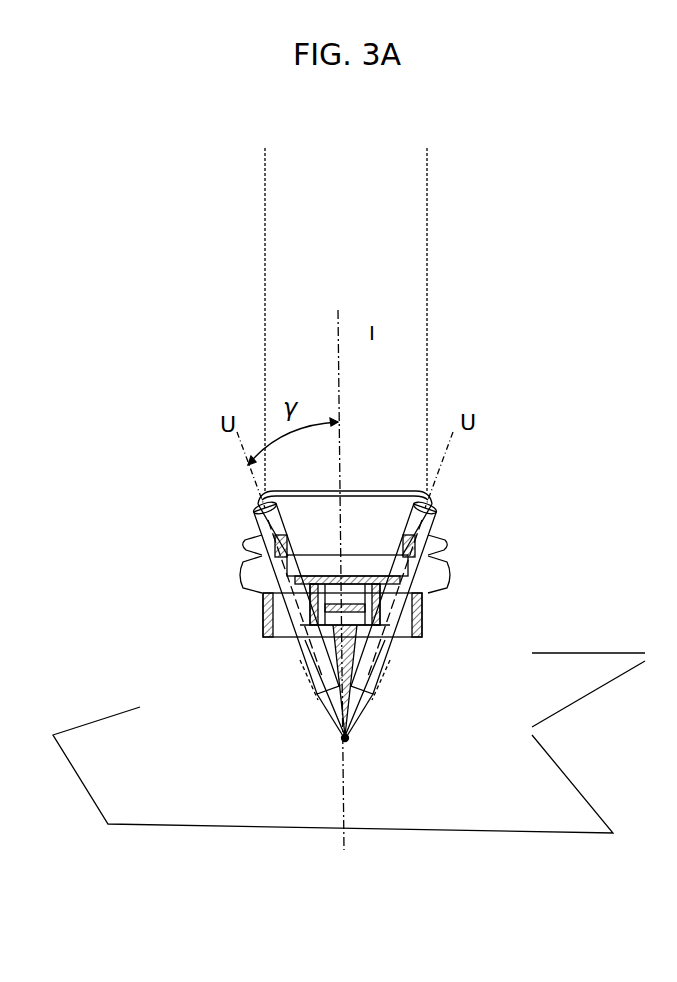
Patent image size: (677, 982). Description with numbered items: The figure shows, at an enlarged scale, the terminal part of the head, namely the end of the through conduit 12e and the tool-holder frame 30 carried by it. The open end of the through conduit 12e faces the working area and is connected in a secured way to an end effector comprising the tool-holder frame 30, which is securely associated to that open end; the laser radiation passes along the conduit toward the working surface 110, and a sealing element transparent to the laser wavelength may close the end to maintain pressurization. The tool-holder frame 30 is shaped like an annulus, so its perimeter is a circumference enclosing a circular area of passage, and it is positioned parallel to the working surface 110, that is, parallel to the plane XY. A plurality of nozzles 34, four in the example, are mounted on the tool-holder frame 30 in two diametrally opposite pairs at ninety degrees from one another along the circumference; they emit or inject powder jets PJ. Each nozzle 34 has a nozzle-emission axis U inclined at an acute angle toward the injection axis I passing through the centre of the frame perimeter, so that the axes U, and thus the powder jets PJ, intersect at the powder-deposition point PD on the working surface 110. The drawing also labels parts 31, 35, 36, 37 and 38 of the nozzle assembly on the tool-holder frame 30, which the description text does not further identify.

The through conduit 12e is at (265, 256).
The tool-holder frame 30 is at (358, 598).
The nozzle holder 31 is at (450, 545).
The nozzles 34 is at (310, 683).
The nozzle tip 35 is at (428, 648).
The lower flange 36 is at (248, 586).
The upper flange 37 is at (247, 548).
The gas tube 38 is at (448, 538).
The working surface 110 is at (349, 743).
The powder jets PJ is at (332, 722).
The powder-deposition point PD is at (376, 770).